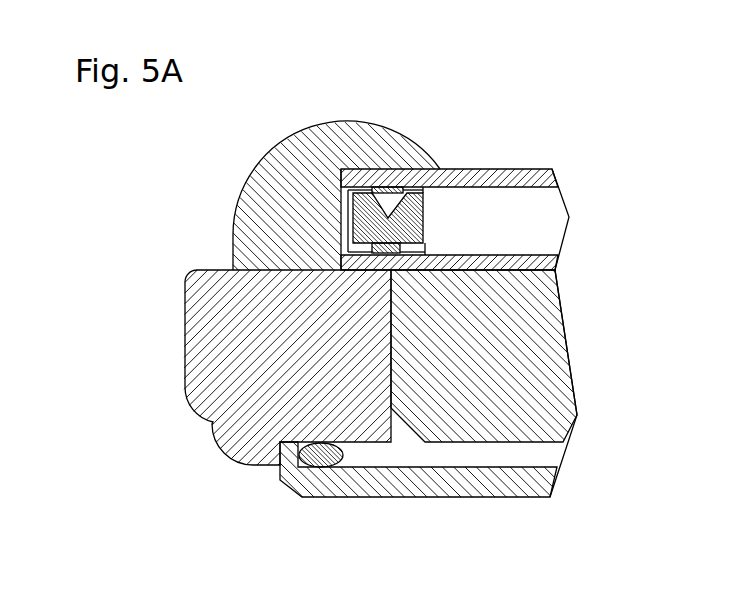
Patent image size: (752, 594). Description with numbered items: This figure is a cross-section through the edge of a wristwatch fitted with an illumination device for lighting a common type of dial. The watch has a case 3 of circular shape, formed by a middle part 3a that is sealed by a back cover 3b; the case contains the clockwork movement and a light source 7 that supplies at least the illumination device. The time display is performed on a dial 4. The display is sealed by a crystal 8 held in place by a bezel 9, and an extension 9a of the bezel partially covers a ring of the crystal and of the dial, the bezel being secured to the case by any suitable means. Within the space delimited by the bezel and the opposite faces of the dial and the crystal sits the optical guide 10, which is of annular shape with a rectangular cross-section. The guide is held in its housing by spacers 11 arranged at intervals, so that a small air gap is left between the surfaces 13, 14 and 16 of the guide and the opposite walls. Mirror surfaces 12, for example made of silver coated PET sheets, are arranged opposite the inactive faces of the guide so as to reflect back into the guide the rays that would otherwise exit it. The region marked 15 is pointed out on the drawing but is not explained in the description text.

The sensor assembly 3 is at (145, 425).
The upper housing part 3a is at (200, 382).
The lower housing plate 3b is at (392, 487).
The tube 4 is at (535, 252).
The support block 7 is at (492, 395).
The tube wall 8 is at (510, 180).
The potting / encapsulation 9 is at (286, 167).
The encapsulation lobe 9a is at (397, 157).
The sensor element 10 is at (450, 226).
The adhesive layer 11 is at (385, 188).
The sealing compound 12 is at (341, 205).
The carrier bracket 13 is at (357, 270).
The top flange 14 is at (412, 190).
The sensor face 15 is at (426, 210).
The sensor side wall 16 is at (356, 222).